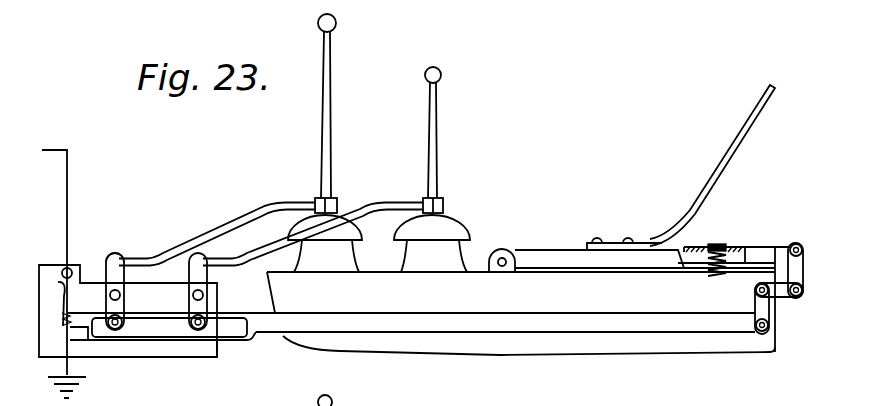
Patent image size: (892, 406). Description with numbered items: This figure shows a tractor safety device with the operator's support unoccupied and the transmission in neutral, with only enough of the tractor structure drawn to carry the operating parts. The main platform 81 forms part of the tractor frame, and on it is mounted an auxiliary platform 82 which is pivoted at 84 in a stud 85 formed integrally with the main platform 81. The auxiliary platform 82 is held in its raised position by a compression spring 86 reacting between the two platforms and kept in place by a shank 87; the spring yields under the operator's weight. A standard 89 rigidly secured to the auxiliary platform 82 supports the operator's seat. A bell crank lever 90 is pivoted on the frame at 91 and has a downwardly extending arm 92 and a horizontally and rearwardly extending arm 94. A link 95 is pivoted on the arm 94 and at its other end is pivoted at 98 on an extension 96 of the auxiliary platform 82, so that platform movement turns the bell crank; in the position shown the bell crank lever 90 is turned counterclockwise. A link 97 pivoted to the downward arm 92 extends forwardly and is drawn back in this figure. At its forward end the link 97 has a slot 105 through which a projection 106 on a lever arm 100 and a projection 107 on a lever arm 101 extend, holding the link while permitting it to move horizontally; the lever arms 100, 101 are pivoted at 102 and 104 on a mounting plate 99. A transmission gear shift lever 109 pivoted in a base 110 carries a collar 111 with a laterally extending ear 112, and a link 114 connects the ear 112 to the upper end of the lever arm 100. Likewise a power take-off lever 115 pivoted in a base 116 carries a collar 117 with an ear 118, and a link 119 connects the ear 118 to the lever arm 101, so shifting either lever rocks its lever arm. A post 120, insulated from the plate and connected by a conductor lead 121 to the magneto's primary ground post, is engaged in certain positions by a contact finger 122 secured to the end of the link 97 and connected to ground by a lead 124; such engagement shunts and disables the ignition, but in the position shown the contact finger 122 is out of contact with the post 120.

The main platform 81 is at (565, 353).
The auxiliary platform 82 is at (562, 249).
The pivot 84 is at (508, 252).
The stud 85 is at (500, 249).
The compression spring 86 is at (702, 246).
The shank 87 is at (723, 243).
The standard 89 is at (735, 139).
The bell crank lever 90 is at (749, 305).
The pivot 91 is at (755, 288).
The downwardly extending arm 92 is at (768, 318).
The horizontally extending arm 94 is at (774, 301).
The link 95 is at (800, 265).
The extension 96 is at (780, 246).
The link 97 is at (622, 331).
The pivot 98 is at (793, 245).
The mounting plate 99 is at (182, 365).
The lever arm 100 is at (108, 258).
The lever arm 101 is at (208, 280).
The pivot 102 is at (121, 297).
The pivot 104 is at (204, 298).
The slot 105 is at (167, 334).
The projection 106 is at (117, 330).
The projection 107 is at (223, 348).
The transmission gear shift lever 109 is at (330, 103).
The base 110 is at (339, 262).
The collar 111 is at (334, 204).
The ear 112 is at (316, 200).
The link 114 is at (238, 216).
The power take-off lever 115 is at (440, 117).
The base 116 is at (448, 256).
The collar 117 is at (440, 205).
The ear 118 is at (420, 200).
The link 119 is at (277, 249).
The post 120 is at (63, 270).
The conductor lead 121 is at (70, 221).
The contact finger 122 is at (66, 301).
The lead 124 is at (65, 349).